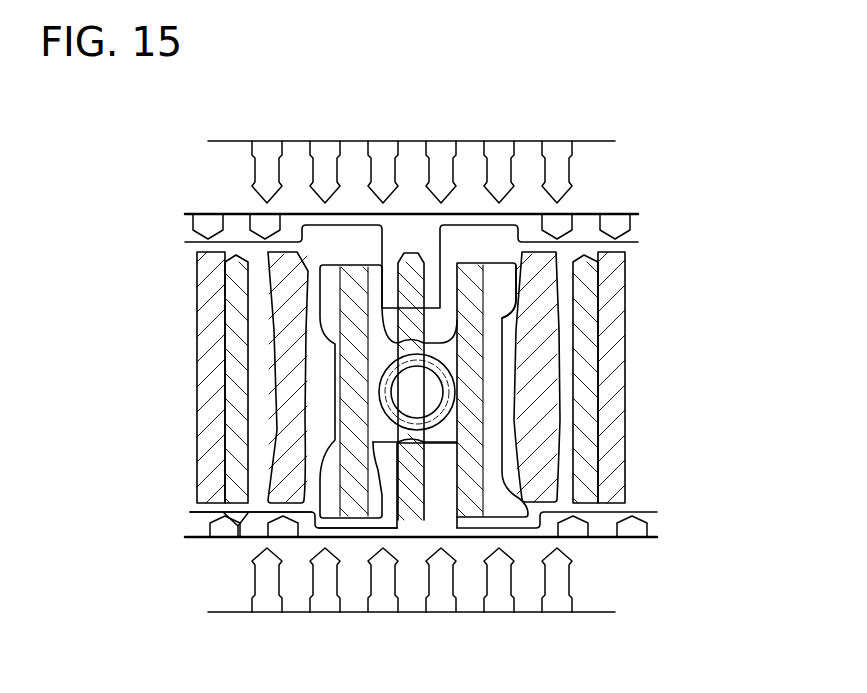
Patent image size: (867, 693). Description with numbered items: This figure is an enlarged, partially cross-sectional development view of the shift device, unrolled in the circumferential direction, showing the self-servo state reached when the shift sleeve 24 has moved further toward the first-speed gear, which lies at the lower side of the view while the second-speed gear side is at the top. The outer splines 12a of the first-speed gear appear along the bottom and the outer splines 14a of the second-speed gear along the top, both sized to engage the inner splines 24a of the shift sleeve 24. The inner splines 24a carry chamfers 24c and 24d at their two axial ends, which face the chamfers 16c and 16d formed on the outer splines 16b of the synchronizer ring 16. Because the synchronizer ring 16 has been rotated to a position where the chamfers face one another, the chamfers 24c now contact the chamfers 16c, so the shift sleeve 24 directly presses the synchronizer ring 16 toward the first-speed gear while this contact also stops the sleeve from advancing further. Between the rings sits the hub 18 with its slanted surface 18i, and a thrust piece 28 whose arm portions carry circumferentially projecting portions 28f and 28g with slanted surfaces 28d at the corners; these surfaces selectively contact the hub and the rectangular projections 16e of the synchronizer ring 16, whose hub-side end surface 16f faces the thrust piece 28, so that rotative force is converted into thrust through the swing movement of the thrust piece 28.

The outer splines 12a is at (573, 583).
The outer splines 14a is at (572, 172).
The synchronizer ring 16 is at (618, 244).
The outer splines 16b is at (227, 527).
The chamfers 16c is at (240, 522).
The chamfers 16d is at (238, 523).
The projections 16e is at (435, 497).
The end surface 16f is at (410, 515).
The hub 18 is at (290, 300).
The slanted surface 18i is at (500, 490).
The shift sleeve 24 is at (625, 372).
The inner splines 24a is at (355, 487).
The chamfers 24c is at (242, 520).
The chamfers 24d is at (240, 520).
The thrust piece 28 is at (367, 287).
The slanted surface 28d is at (333, 288).
The projecting portion 28f is at (495, 487).
The projecting portion 28g is at (500, 290).